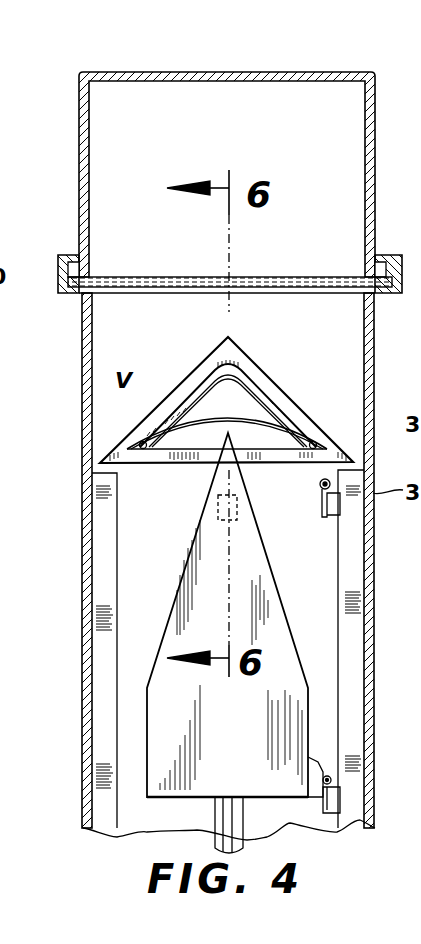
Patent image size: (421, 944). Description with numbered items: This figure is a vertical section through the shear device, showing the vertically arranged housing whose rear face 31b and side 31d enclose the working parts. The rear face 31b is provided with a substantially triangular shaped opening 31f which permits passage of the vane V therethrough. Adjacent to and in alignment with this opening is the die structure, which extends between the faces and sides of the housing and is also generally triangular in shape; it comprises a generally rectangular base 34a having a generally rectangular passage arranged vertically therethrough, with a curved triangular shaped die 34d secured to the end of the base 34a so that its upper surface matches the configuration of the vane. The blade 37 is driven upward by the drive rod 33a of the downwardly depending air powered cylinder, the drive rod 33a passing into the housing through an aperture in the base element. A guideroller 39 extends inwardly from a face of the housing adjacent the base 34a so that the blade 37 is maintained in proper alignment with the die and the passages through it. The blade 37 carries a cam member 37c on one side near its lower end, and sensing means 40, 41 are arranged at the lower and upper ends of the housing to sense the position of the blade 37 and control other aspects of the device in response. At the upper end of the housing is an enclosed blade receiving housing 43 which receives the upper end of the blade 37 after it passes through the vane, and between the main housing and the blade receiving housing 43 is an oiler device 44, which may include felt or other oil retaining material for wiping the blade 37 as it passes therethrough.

The blade receiving housing 43 is at (158, 71).
The oiler device 44 is at (273, 277).
The rear face 31b is at (151, 330).
The side 31d is at (82, 500).
The triangular shaped opening 31f is at (243, 350).
The curved triangular shaped die 34d is at (186, 378).
The base 34a is at (280, 457).
The guideroller 39 is at (218, 507).
The blade 37 is at (267, 603).
The sensing means 41 is at (340, 503).
The bracket 37c is at (317, 760).
The sensing means 40 is at (340, 798).
The drive rod 33a is at (247, 843).